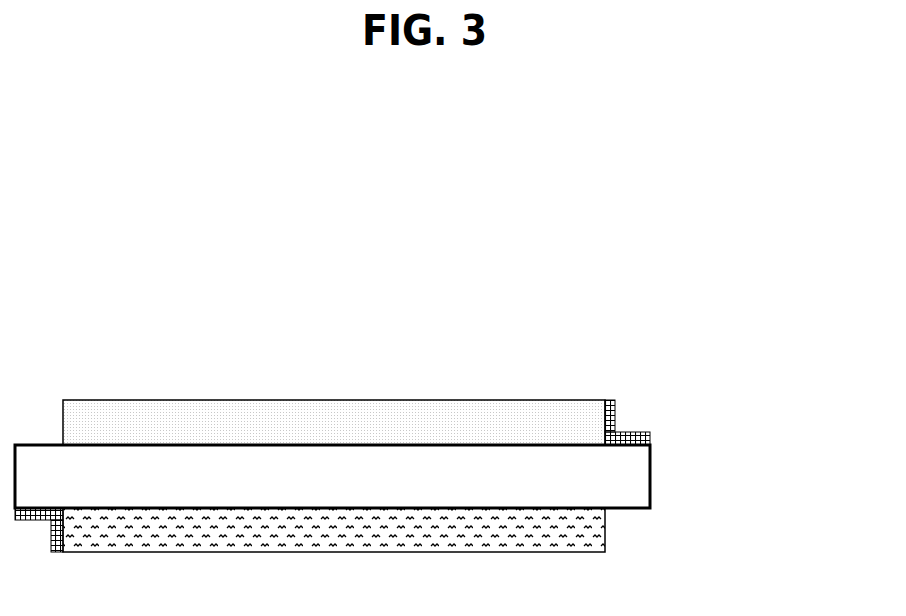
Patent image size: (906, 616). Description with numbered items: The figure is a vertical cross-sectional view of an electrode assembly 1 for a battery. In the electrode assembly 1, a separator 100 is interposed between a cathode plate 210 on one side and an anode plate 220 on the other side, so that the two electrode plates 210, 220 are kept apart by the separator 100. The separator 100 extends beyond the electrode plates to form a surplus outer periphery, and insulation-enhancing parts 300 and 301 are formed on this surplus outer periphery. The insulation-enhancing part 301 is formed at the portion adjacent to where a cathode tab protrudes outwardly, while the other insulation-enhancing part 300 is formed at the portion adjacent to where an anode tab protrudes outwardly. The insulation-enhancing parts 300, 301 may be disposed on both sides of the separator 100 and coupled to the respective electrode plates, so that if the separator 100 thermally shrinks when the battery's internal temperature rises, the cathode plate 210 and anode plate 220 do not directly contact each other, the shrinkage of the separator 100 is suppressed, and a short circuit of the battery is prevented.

The electrode assembly 1 is at (41, 368).
The separator 100 is at (158, 477).
The cathode plate 210 is at (160, 422).
The anode plate 220 is at (155, 540).
The insulation-enhancing part 300 is at (63, 508).
The insulation-enhancing part 301 is at (623, 432).